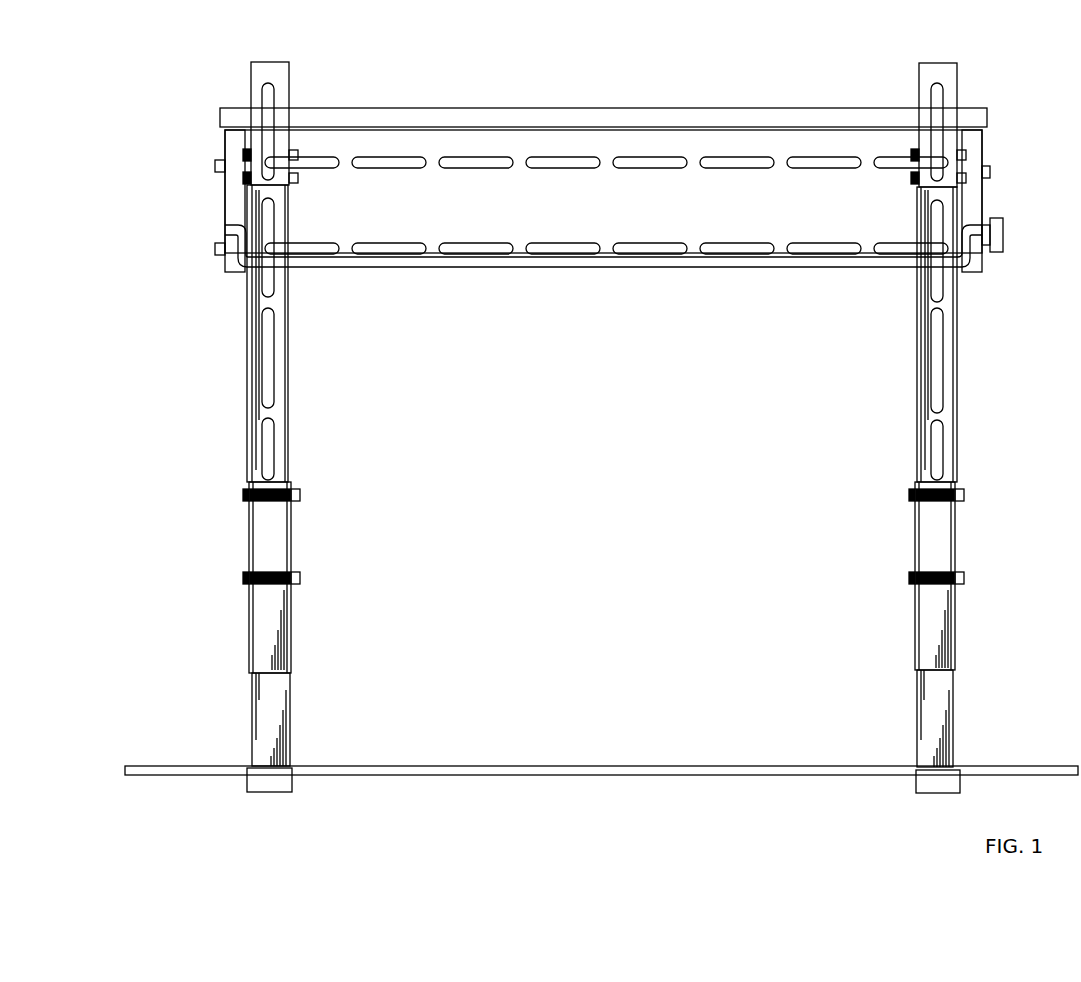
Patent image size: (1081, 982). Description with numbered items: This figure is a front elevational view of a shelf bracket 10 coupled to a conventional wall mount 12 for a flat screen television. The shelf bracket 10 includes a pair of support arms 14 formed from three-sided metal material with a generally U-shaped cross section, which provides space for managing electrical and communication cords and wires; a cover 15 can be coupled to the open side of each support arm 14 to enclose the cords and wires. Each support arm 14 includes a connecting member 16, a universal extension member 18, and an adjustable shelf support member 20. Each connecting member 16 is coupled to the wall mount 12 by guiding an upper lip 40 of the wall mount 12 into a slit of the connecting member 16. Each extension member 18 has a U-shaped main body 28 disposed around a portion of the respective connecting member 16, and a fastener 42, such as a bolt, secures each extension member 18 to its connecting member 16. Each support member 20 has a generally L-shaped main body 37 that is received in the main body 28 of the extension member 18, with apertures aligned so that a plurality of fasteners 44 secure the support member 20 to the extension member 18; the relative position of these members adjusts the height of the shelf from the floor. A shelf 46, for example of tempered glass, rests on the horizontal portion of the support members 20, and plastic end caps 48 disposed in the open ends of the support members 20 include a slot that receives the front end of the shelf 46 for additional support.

The shelf bracket 10 is at (152, 70).
The wall mount 12 is at (587, 104).
The support arm 14 is at (291, 58).
The cover 15 is at (262, 718).
The connecting member 16 is at (251, 80).
The universal extension member 18 is at (250, 385).
The adjustable shelf support member 20 is at (250, 657).
The main body 28 is at (285, 378).
The main body 37 is at (280, 537).
The upper lip 40 is at (742, 108).
The fastener 42 is at (300, 178).
The fastener 44 is at (300, 495).
The shelf 46 is at (592, 765).
The end cap 48 is at (250, 783).